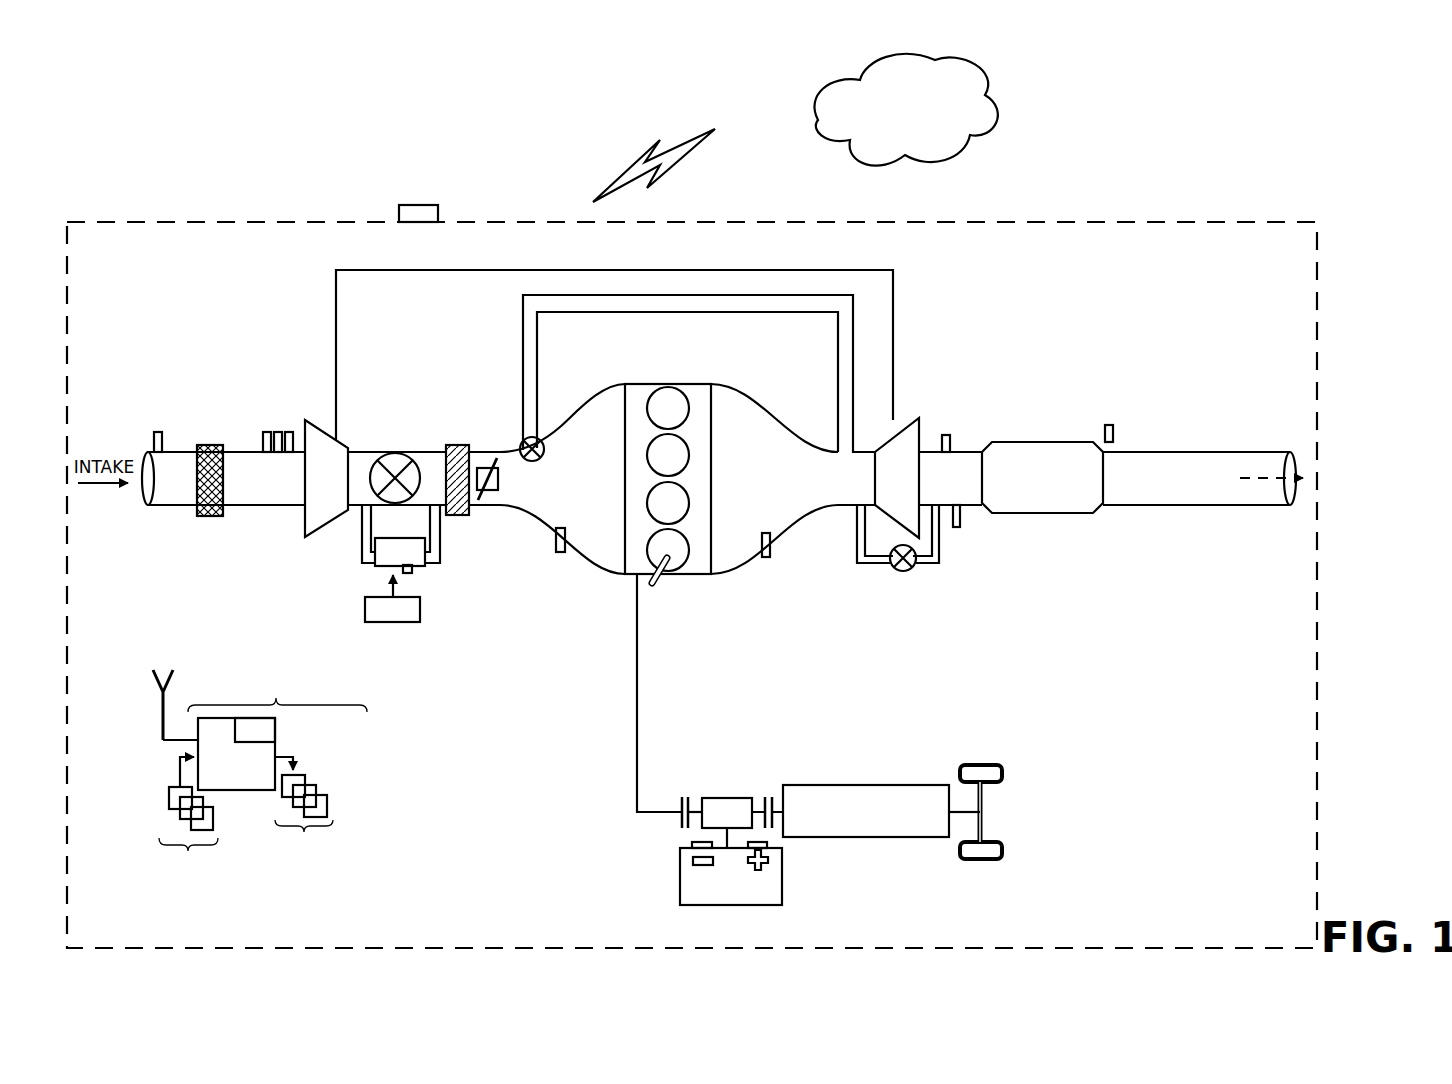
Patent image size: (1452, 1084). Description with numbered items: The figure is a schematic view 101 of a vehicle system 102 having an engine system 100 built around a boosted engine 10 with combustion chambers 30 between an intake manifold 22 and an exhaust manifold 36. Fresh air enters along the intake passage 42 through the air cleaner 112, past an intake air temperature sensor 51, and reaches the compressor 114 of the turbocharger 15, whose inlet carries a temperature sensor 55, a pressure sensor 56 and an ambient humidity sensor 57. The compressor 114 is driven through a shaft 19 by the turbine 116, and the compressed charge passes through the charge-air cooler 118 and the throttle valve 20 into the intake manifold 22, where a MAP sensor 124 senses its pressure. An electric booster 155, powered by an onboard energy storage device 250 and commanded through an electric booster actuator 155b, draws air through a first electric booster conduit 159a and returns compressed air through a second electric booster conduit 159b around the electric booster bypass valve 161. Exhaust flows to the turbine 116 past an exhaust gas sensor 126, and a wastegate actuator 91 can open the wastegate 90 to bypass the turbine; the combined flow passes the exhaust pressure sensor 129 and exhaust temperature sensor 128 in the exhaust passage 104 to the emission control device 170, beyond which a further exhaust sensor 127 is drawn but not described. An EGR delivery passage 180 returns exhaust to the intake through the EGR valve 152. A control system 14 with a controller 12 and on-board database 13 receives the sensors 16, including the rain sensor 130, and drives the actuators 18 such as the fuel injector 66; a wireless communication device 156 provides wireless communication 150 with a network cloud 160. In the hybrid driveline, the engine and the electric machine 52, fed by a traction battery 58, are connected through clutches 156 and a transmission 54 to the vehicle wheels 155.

The engine system 100 is at (1158, 341).
The schematic view 101 is at (1350, 86).
The vehicle system 102 is at (248, 222).
The engine 10 is at (683, 479).
The controller 12 is at (236, 754).
The on-board database 13 is at (255, 730).
The control system 14 is at (549, 739).
The turbocharger 15 is at (309, 489).
The sensors 16 is at (194, 823).
The actuators 18 is at (318, 821).
The shaft 19 is at (715, 270).
The throttle valve 20 is at (498, 482).
The intake manifold 22 is at (547, 479).
The combustion chambers 30 is at (688, 402).
The exhaust manifold 36 is at (793, 479).
The intake passage 42 is at (155, 505).
The intake air temperature sensor 51 is at (158, 432).
The electric machine 52 is at (720, 798).
The transmission 54 is at (910, 838).
The compressor inlet temperature sensor 55 is at (267, 432).
The compressor inlet pressure sensor 56 is at (278, 432).
The ambient humidity sensor 57 is at (289, 432).
The traction battery 58 is at (780, 880).
The fuel injector 66 is at (658, 580).
The wastegate 90 is at (857, 563).
The wastegate actuator 91 is at (903, 571).
The exhaust passage 104 is at (984, 505).
The air cleaner 112 is at (210, 445).
The compressor 114 is at (298, 550).
The turbine 116 is at (897, 478).
The charge-air cooler 118 is at (458, 445).
The manifold air pressure sensor 124 is at (558, 552).
The exhaust gas sensor 126 is at (770, 545).
The exhaust sensor 127 is at (1109, 425).
The exhaust temperature sensor 128 is at (957, 527).
The exhaust pressure sensor 129 is at (946, 435).
The rain sensor 130 is at (418, 205).
The wireless communication 150 is at (633, 162).
The EGR valve 152 is at (544, 449).
The electric booster 155 is at (1005, 878).
The electric booster actuator 155b is at (412, 572).
The wireless communication device 156 is at (163, 735).
The first electric booster conduit 159a is at (366, 563).
The second electric booster conduit 159b is at (440, 560).
The network cloud 160 is at (918, 165).
The electric booster bypass valve 161 is at (400, 453).
The emission control device 170 is at (1010, 442).
The EGR delivery passage 180 is at (672, 313).
The onboard energy storage device 250 is at (392, 598).